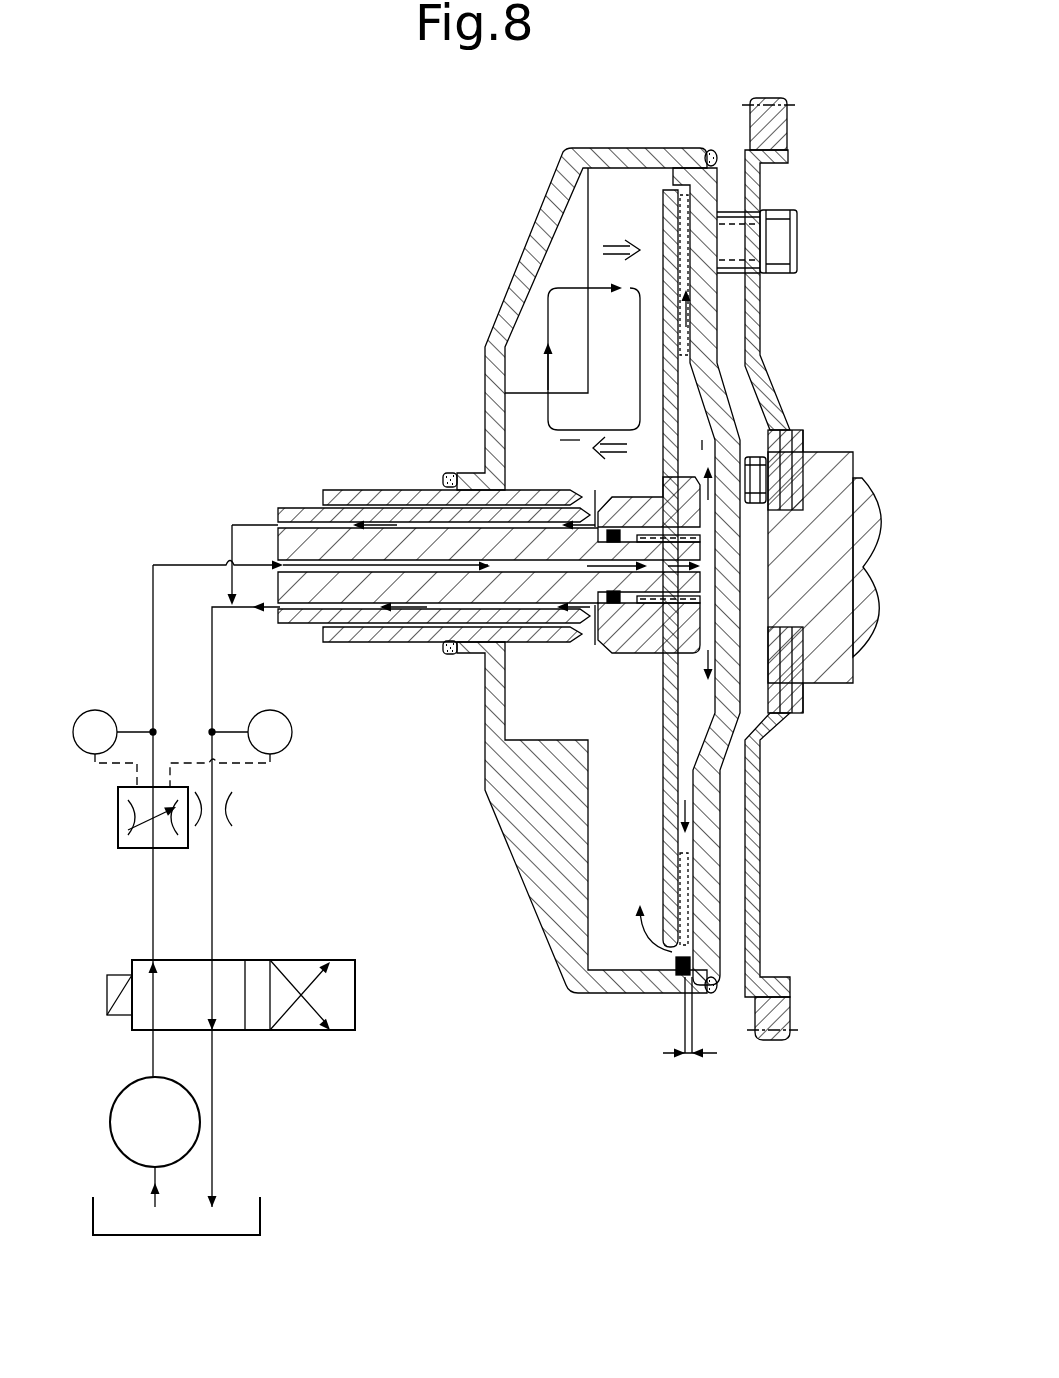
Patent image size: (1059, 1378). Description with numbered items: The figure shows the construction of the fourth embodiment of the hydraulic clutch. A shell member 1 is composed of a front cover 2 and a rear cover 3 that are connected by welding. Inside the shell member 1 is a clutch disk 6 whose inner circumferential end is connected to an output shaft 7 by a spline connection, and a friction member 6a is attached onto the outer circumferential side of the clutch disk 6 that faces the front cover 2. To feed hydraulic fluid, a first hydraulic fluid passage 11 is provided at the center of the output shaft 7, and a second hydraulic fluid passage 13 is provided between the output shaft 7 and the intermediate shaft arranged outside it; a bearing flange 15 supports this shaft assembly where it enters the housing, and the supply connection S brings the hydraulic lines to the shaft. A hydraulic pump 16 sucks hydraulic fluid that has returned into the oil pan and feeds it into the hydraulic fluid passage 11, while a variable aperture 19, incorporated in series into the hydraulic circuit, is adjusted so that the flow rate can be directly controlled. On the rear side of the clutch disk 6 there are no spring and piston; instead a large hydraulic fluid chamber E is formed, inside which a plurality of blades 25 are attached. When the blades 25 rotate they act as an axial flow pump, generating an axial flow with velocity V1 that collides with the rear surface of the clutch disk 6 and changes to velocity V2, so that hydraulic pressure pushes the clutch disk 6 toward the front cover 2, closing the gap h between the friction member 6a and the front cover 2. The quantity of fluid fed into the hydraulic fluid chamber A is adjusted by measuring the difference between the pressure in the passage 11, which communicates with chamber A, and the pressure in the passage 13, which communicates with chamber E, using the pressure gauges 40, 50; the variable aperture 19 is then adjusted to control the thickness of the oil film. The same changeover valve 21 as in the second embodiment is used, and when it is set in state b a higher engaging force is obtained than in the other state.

The shell member 1 is at (628, 133).
The front cover 2 is at (703, 203).
The rear cover 3 is at (540, 227).
The clutch disk 6 is at (672, 412).
The friction member 6a is at (688, 262).
The output shaft 7 is at (440, 593).
The first hydraulic fluid passage 11 is at (423, 570).
The second hydraulic fluid passage 13 is at (318, 523).
The bearing flange 15 is at (380, 497).
The hydraulic pump 16 is at (178, 1163).
The variable aperture 19 is at (173, 853).
The changeover valve 21 is at (318, 1033).
The blades 25 is at (570, 317).
The pressure gauge 40 is at (95, 708).
The pressure gauge 50 is at (287, 712).
The hydraulic fluid chamber A is at (693, 447).
The hydraulic fluid chamber E is at (570, 445).
The supply line S is at (187, 563).
The axial flow velocity V1 is at (619, 238).
The changed flow velocity V2 is at (621, 460).
The changeover valve state b is at (289, 1048).
The gap width h is at (690, 1033).